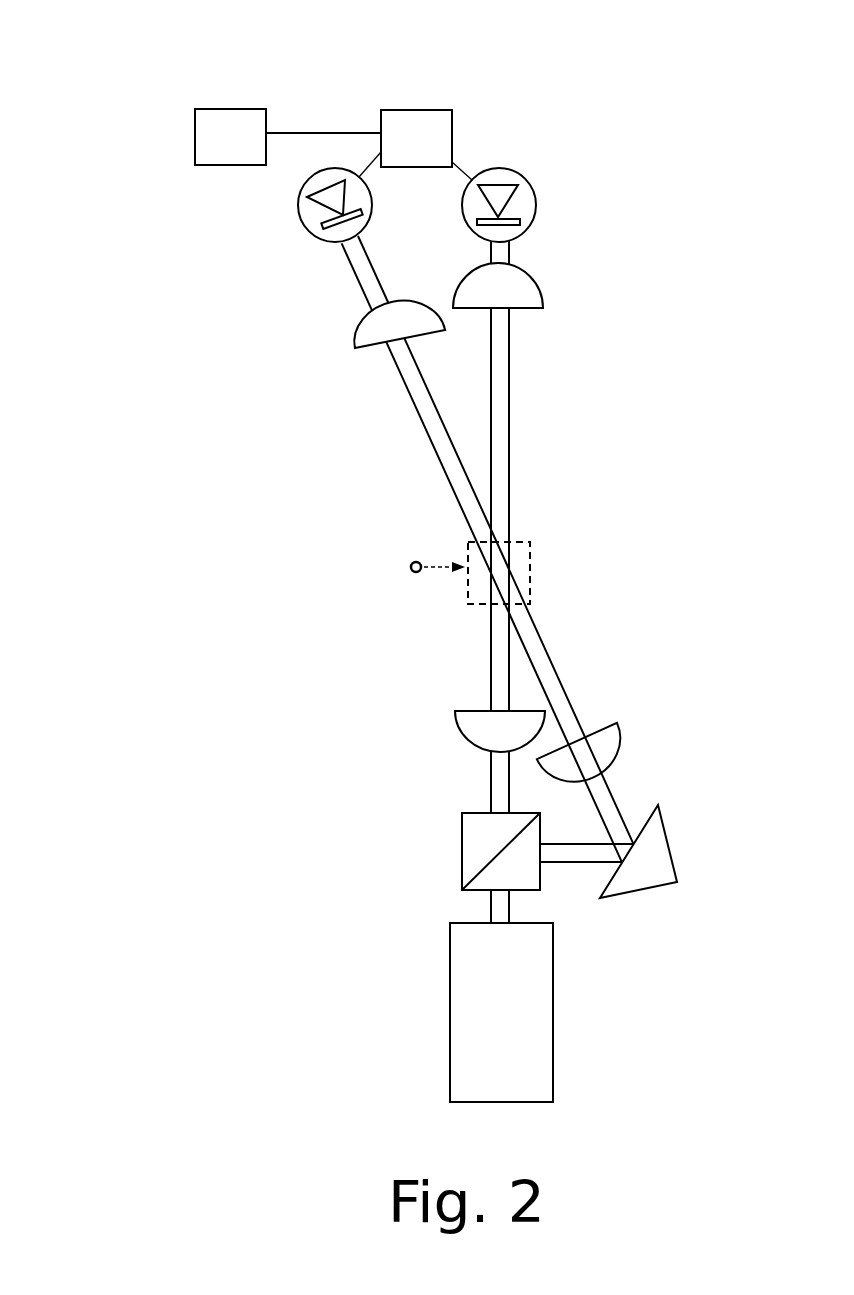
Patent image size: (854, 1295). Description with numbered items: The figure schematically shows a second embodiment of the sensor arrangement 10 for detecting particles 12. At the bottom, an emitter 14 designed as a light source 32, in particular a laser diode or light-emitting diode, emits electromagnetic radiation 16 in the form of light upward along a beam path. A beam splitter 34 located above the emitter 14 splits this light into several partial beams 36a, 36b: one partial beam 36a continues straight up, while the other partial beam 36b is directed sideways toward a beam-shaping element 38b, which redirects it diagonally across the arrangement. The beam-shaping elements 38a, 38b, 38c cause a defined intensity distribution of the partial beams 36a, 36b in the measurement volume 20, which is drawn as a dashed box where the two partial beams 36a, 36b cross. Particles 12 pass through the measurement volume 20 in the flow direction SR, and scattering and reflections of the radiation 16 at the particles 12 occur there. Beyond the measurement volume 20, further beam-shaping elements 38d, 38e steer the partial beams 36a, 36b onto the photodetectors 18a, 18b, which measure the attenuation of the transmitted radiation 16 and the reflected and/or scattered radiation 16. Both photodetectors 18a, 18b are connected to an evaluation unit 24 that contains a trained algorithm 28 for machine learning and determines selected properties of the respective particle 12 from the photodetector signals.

The sensor arrangement 10 is at (709, 75).
The particles 12 is at (410, 563).
The emitter 14 is at (578, 1067).
The electromagnetic radiation 16 is at (497, 912).
The photodetector 18a is at (313, 235).
The photodetector 18b is at (533, 220).
The measurement volume 20 is at (530, 563).
The evaluation unit 24 is at (453, 132).
The trained algorithm 28 is at (195, 133).
The light source 32 is at (455, 1037).
The beam splitter 34 is at (462, 840).
The partial beam 36a is at (482, 772).
The partial beam 36b is at (565, 858).
The beam-shaping element 38a is at (462, 710).
The beam-shaping element 38b is at (665, 830).
The beam-shaping element 38c is at (620, 722).
The beam-shaping element 38d is at (368, 343).
The beam-shaping element 38e is at (540, 305).
The flow direction SR is at (440, 556).